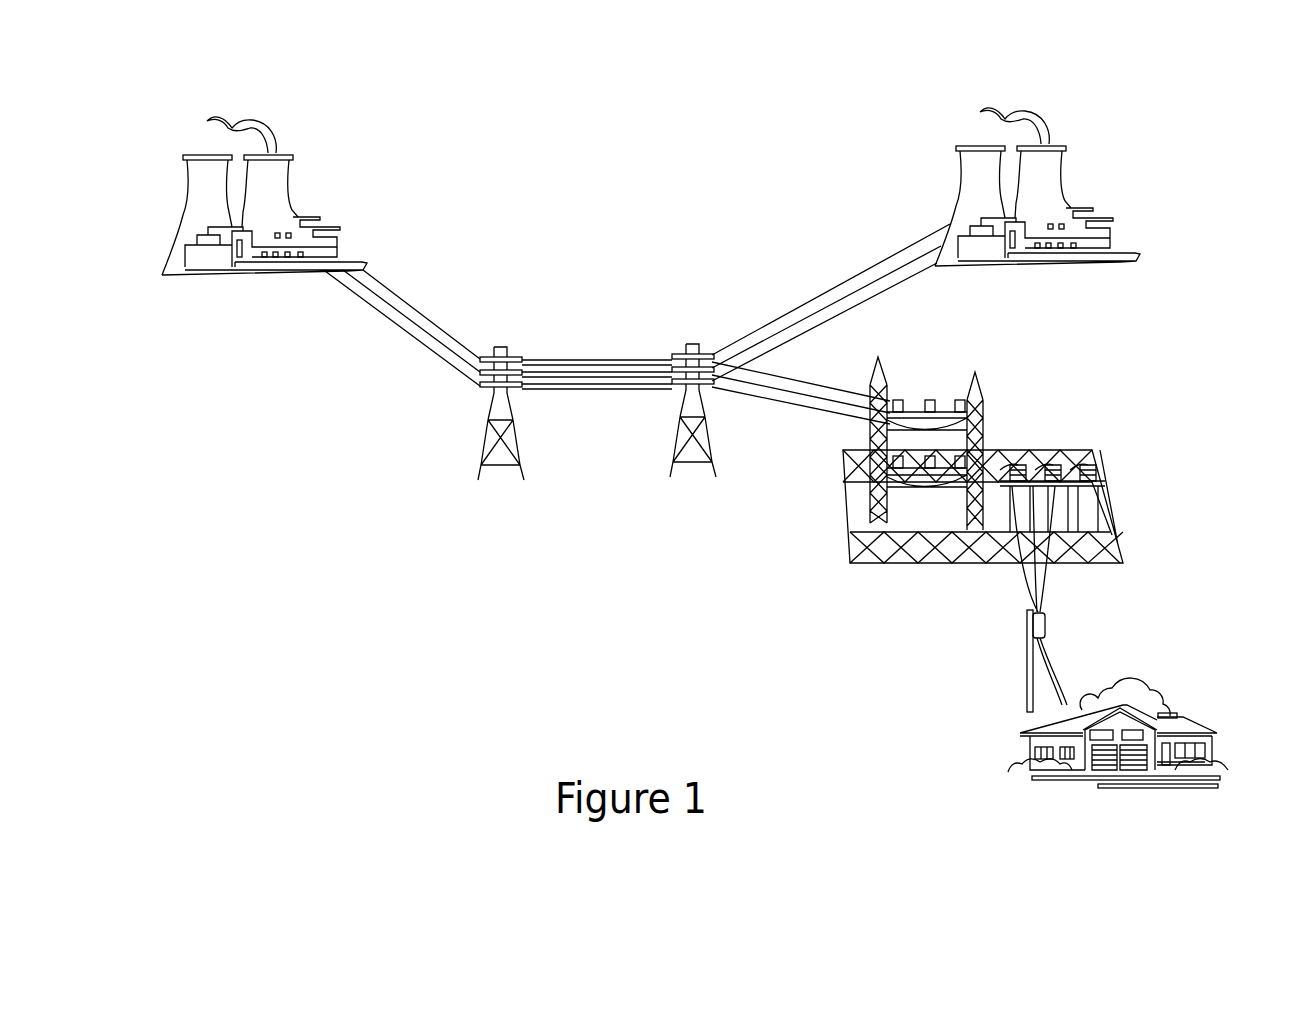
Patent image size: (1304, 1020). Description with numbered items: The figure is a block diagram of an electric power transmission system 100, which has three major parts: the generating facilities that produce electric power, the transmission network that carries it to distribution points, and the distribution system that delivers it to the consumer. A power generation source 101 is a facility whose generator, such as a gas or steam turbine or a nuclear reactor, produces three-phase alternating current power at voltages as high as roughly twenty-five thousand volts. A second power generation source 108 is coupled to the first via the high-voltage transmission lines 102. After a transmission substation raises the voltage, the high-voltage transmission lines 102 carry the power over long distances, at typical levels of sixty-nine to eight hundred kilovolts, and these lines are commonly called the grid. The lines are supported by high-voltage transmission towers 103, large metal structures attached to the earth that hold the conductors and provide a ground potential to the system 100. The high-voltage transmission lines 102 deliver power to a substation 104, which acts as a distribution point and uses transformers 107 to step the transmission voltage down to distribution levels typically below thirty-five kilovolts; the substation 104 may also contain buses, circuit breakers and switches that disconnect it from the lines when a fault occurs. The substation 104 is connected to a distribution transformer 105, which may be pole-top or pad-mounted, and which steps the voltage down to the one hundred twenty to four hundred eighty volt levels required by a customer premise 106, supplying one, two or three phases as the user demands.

The electric power transmission system 100 is at (515, 158).
The power generation source 101 is at (267, 169).
The high-voltage transmission lines 102 is at (737, 334).
The high-voltage transmission towers 103 is at (531, 457).
The substation 104 is at (928, 460).
The distribution transformer 105 is at (1055, 624).
The customer premise 106 is at (1118, 761).
The transformers 107 is at (1105, 479).
The power generation source 108 is at (1065, 160).